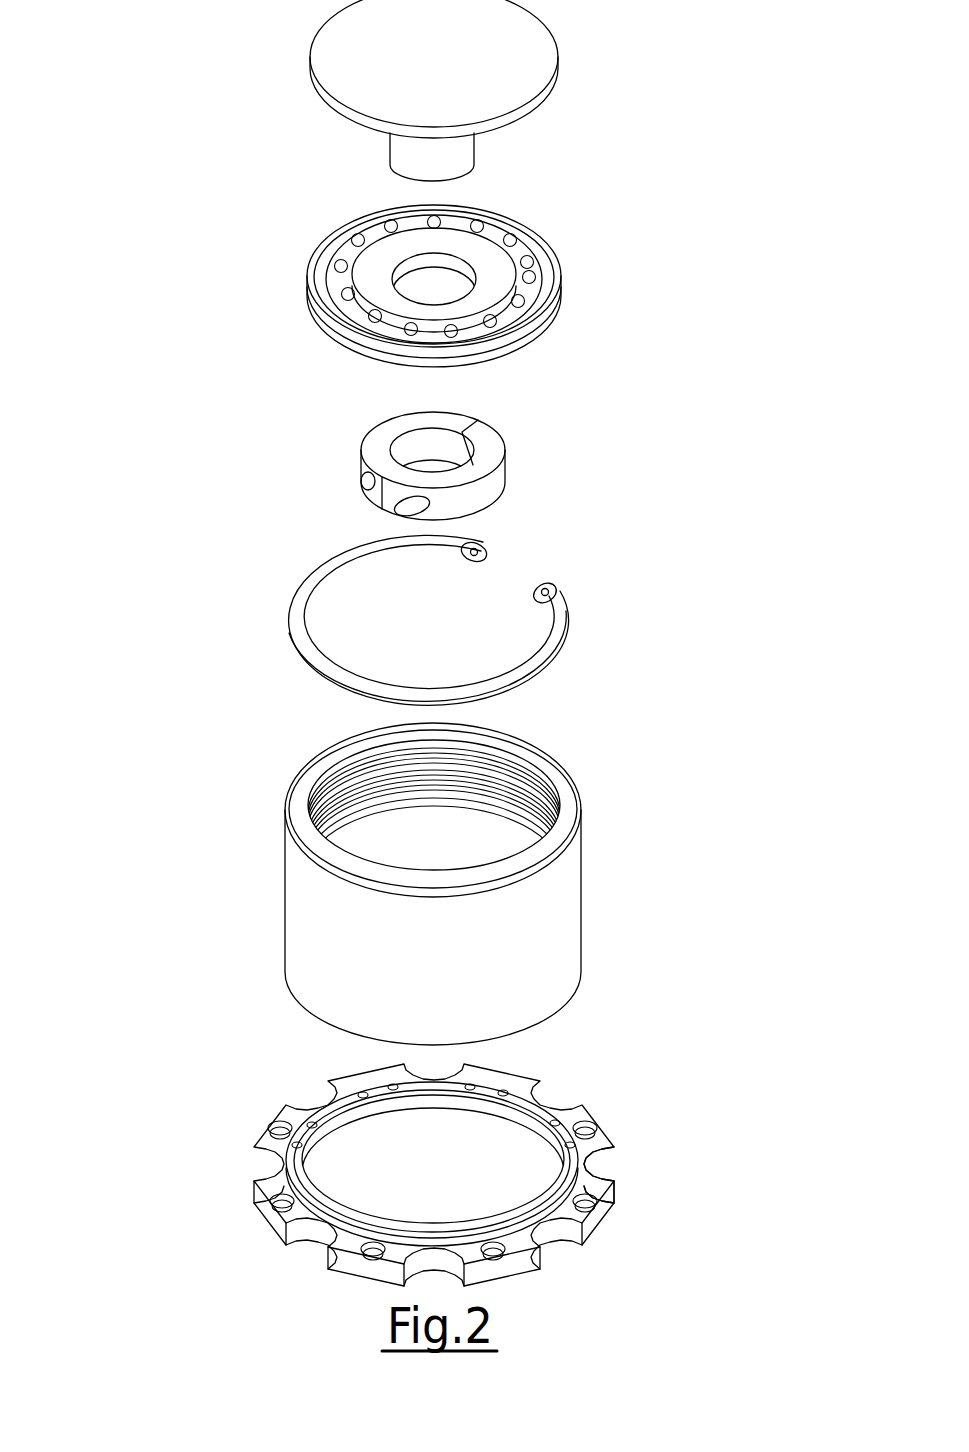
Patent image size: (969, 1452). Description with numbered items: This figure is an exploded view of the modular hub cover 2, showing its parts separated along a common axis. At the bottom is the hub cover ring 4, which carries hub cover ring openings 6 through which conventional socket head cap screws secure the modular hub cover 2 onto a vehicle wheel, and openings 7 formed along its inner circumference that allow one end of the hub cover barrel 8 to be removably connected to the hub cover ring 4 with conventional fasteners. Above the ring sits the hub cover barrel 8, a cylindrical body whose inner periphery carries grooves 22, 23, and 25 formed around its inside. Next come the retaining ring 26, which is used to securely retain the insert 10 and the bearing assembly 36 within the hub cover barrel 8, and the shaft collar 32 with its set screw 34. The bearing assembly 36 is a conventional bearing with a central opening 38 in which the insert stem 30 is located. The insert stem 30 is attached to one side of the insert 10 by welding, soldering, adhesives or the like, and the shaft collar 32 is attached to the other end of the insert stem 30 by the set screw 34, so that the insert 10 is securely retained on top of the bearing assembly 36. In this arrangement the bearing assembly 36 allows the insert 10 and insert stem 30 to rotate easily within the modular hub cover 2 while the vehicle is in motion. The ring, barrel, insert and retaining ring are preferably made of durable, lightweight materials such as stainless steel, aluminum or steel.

The modular hub cover 2 is at (249, 850).
The hub cover ring 4 is at (535, 1085).
The hub cover ring openings 6 is at (448, 1161).
The openings 7 is at (587, 1153).
The hub cover barrel 8 is at (471, 861).
The insert 10 is at (458, 95).
The groove 22 is at (572, 817).
The groove 23 is at (372, 785).
The groove 25 is at (503, 750).
The retaining ring 26 is at (572, 620).
The insert stem 30 is at (397, 150).
The shaft collar 32 is at (462, 466).
The set screw 34 is at (366, 470).
The bearing assembly 36 is at (449, 286).
The opening 38 is at (425, 275).